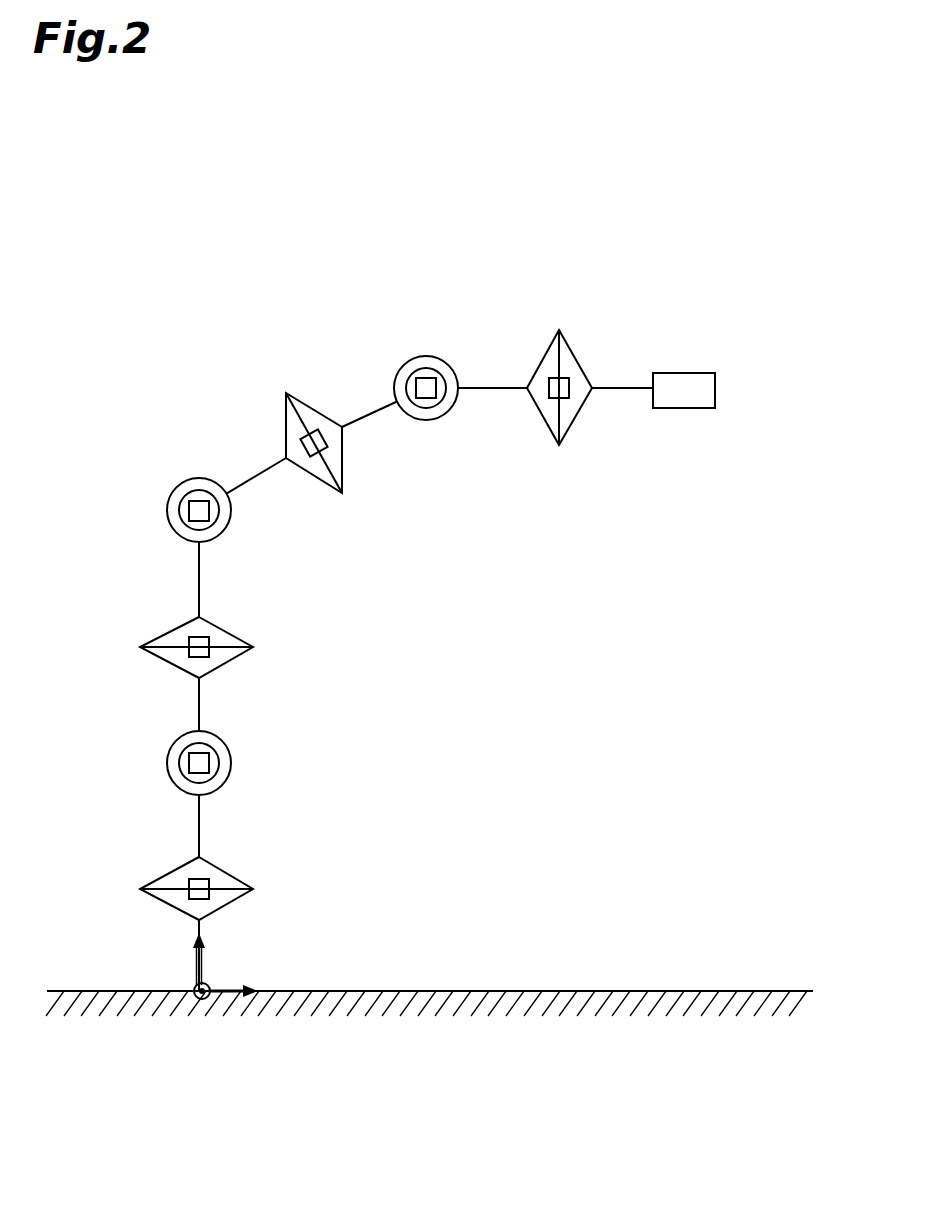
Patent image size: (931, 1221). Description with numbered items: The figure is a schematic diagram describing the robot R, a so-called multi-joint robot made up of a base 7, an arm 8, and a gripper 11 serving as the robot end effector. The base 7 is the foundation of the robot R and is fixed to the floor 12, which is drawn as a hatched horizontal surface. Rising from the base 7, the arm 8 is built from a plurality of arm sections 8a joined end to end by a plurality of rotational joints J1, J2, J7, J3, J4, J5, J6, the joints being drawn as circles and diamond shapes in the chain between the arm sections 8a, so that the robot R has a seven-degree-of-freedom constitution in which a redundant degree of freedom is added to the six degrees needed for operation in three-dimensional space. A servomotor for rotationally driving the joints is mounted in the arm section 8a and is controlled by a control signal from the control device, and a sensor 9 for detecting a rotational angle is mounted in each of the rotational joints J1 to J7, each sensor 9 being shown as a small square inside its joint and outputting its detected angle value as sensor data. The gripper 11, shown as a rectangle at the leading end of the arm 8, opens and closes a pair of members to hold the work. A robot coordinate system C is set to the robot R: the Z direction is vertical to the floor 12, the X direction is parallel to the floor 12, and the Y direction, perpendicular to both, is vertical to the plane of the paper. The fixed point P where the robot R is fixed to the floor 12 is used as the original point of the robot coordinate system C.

The robot R is at (405, 218).
The base 7 is at (203, 930).
The arm 8 is at (378, 543).
The arm section 8a is at (255, 478).
The sensor 9 is at (210, 885).
The gripper 11 is at (688, 373).
The floor 12 is at (725, 990).
The rotational joint J1 is at (235, 900).
The rotational joint J2 is at (230, 770).
The rotational joint J3 is at (229, 527).
The rotational joint J4 is at (318, 480).
The rotational joint J5 is at (420, 420).
The rotational joint J6 is at (543, 418).
The rotational joint J7 is at (233, 660).
The fixed point P is at (201, 1000).
The robot coordinate system C is at (200, 1015).
The X direction X is at (228, 993).
The Y direction Y is at (195, 997).
The Z direction Z is at (196, 965).